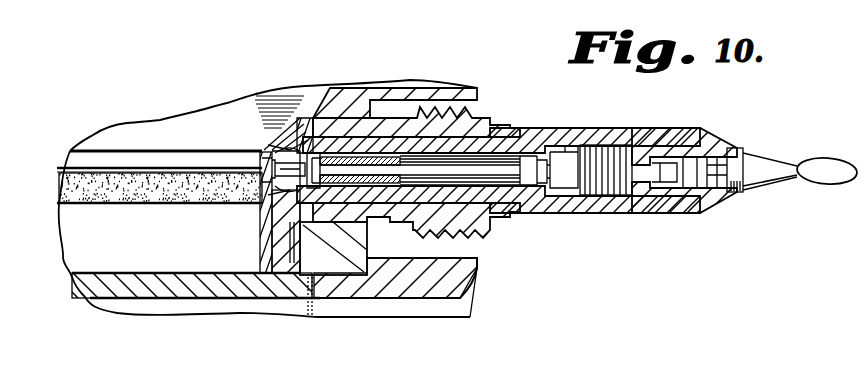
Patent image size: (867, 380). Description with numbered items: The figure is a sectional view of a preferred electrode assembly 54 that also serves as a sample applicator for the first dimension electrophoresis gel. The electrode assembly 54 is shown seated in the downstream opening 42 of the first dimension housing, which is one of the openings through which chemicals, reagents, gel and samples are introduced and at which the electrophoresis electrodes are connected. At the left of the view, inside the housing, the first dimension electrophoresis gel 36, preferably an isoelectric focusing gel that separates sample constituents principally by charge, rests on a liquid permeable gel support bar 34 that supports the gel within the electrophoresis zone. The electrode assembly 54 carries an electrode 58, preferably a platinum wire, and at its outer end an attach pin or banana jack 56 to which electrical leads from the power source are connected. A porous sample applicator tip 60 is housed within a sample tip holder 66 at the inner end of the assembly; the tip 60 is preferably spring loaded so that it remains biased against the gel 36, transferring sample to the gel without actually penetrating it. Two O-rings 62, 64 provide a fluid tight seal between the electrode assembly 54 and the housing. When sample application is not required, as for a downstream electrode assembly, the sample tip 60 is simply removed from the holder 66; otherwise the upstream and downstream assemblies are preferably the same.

The liquid permeable gel support bar 34 is at (83, 190).
The first dimension electrophoresis gel 36 is at (122, 168).
The opening in the downstream end 42 is at (274, 151).
The electrode assembly 54 is at (589, 128).
The outer attach pin or banana jack 56 is at (773, 178).
The electrode 58 is at (648, 212).
The porous sample applicator tip 60 is at (283, 183).
The O-ring 62 is at (288, 152).
The O-ring 64 is at (367, 236).
The sample tip holder 66 is at (284, 175).